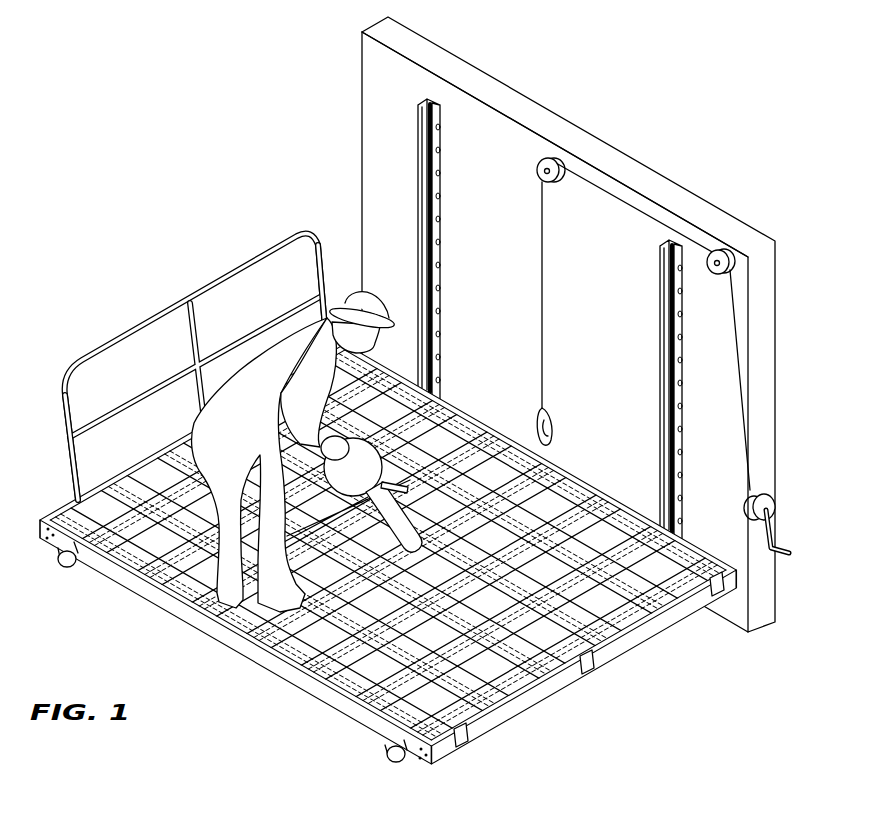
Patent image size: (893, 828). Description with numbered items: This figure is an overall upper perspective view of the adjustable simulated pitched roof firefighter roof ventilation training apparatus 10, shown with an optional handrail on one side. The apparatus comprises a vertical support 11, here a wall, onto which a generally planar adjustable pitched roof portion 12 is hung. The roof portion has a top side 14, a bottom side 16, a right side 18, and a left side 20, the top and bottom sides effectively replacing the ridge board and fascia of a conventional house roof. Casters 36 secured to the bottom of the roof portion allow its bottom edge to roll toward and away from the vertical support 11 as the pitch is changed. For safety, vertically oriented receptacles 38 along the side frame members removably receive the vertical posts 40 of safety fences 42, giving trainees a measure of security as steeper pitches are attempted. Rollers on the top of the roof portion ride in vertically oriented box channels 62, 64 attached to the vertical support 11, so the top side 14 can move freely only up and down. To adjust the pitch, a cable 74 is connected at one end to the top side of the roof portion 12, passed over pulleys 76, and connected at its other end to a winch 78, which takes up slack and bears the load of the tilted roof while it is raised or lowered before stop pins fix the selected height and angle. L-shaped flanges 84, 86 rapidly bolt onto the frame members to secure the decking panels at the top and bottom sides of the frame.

The adjustable simulated pitched roof firefighter roof ventilation training apparatu 10 is at (627, 115).
The vertical support 11 is at (763, 281).
The adjustable pitched roof portion 12 is at (387, 554).
The top side 14 is at (565, 458).
The bottom side 16 is at (231, 647).
The right side 18 is at (538, 693).
The left side 20 is at (167, 558).
The casters 36 is at (72, 565).
The receptacles 38 is at (470, 742).
The posts 40 is at (324, 250).
The safety fences 42 is at (100, 343).
The box channel 62 is at (659, 355).
The box channel 64 is at (417, 236).
The cable 74 is at (541, 250).
The pulleys 76 is at (537, 163).
The winch 78 is at (764, 492).
The L-shaped flange 84 is at (298, 667).
The L-shaped flange 86 is at (523, 435).